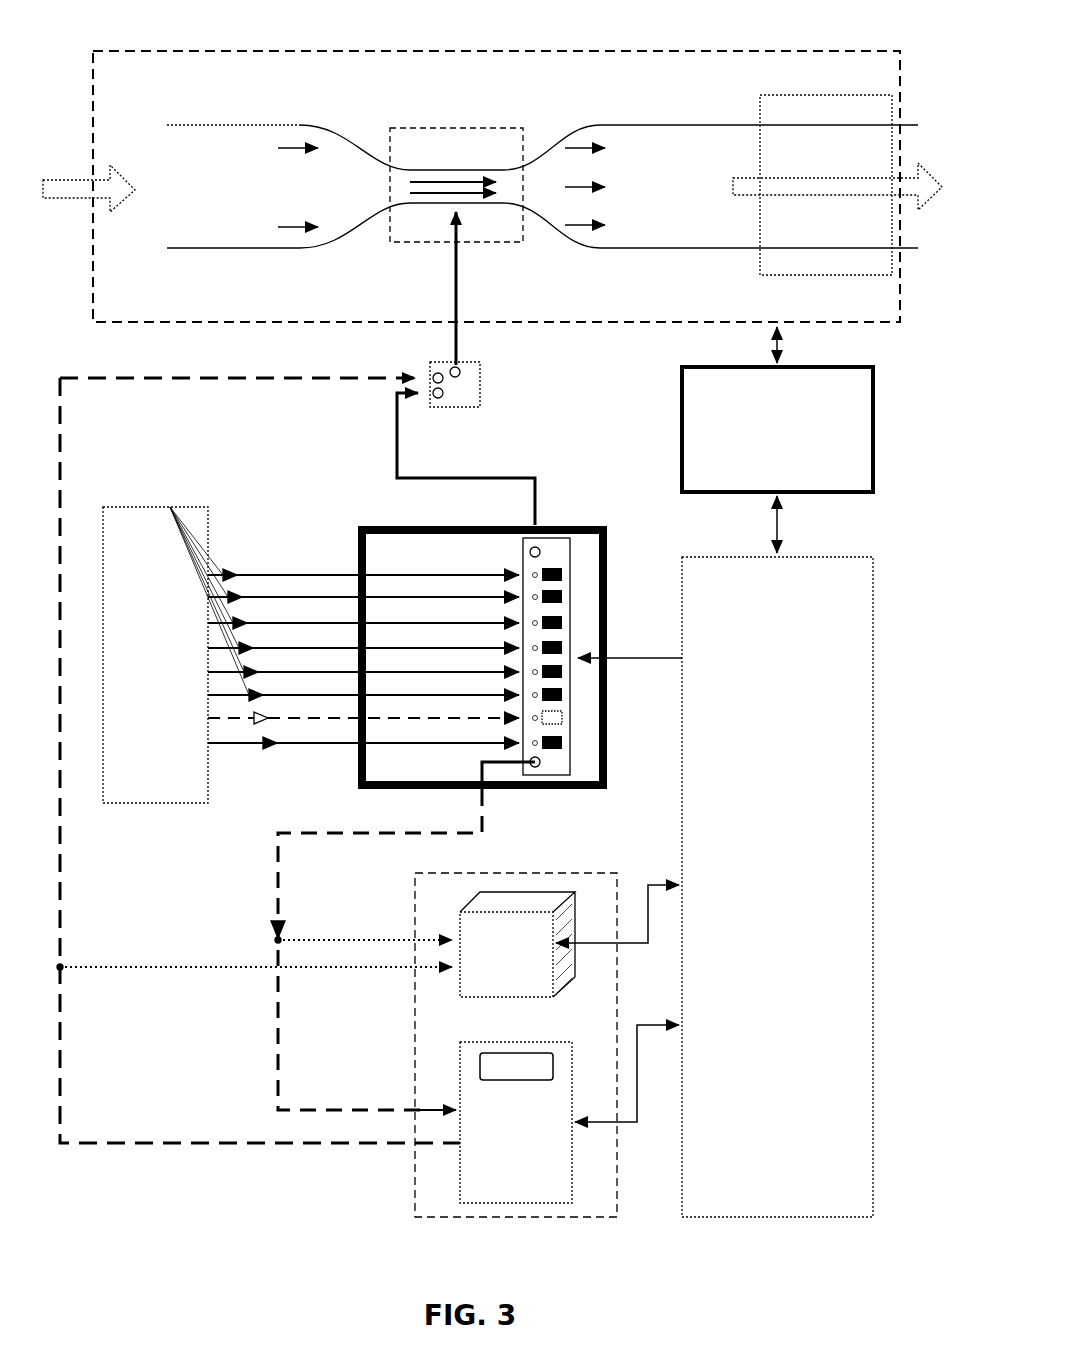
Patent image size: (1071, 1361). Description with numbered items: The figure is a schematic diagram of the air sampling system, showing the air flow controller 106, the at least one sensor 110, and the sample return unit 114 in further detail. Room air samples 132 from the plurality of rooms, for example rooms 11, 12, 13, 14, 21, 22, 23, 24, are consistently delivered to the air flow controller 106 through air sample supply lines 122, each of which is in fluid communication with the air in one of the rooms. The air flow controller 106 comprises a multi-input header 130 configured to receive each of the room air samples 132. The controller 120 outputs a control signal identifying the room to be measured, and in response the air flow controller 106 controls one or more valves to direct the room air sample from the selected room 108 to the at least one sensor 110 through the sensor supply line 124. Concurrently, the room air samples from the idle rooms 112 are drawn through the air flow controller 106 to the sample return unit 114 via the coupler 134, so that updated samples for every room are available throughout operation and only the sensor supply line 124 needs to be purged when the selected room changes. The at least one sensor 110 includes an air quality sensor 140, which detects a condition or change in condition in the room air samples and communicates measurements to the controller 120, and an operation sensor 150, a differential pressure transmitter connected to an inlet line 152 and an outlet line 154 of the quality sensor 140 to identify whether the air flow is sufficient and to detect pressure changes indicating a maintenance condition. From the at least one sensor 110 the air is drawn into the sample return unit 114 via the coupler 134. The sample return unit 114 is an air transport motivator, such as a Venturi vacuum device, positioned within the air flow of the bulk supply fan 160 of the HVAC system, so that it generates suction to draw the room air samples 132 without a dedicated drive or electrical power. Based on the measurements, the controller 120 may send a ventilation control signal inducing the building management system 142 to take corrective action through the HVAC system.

The sample return unit 114 is at (335, 78).
The bulk supply fan 160 is at (826, 185).
The coupler 134 is at (482, 383).
The building management system 142 is at (777, 460).
The controller 120 is at (725, 887).
The room air samples 132 is at (155, 655).
The air sample supply lines 122 is at (363, 594).
The room 24 is at (363, 568).
The room 23 is at (363, 590).
The room 22 is at (363, 616).
The room 21 is at (363, 641).
The room 14 is at (363, 665).
The room 13 is at (363, 688).
The room 12 is at (363, 708).
The room 11 is at (363, 736).
The selected room 108 is at (256, 724).
The idle rooms 112 is at (170, 507).
The multi-input header 130 is at (607, 535).
The air flow controller 106 is at (548, 522).
The outlet line 154 is at (62, 942).
The inlet line 152 is at (276, 1022).
The sensor supply line 124 is at (276, 873).
The at least one sensor 110 is at (413, 1052).
The operation sensor 150 is at (569, 941).
The air quality sensor 140 is at (569, 1114).